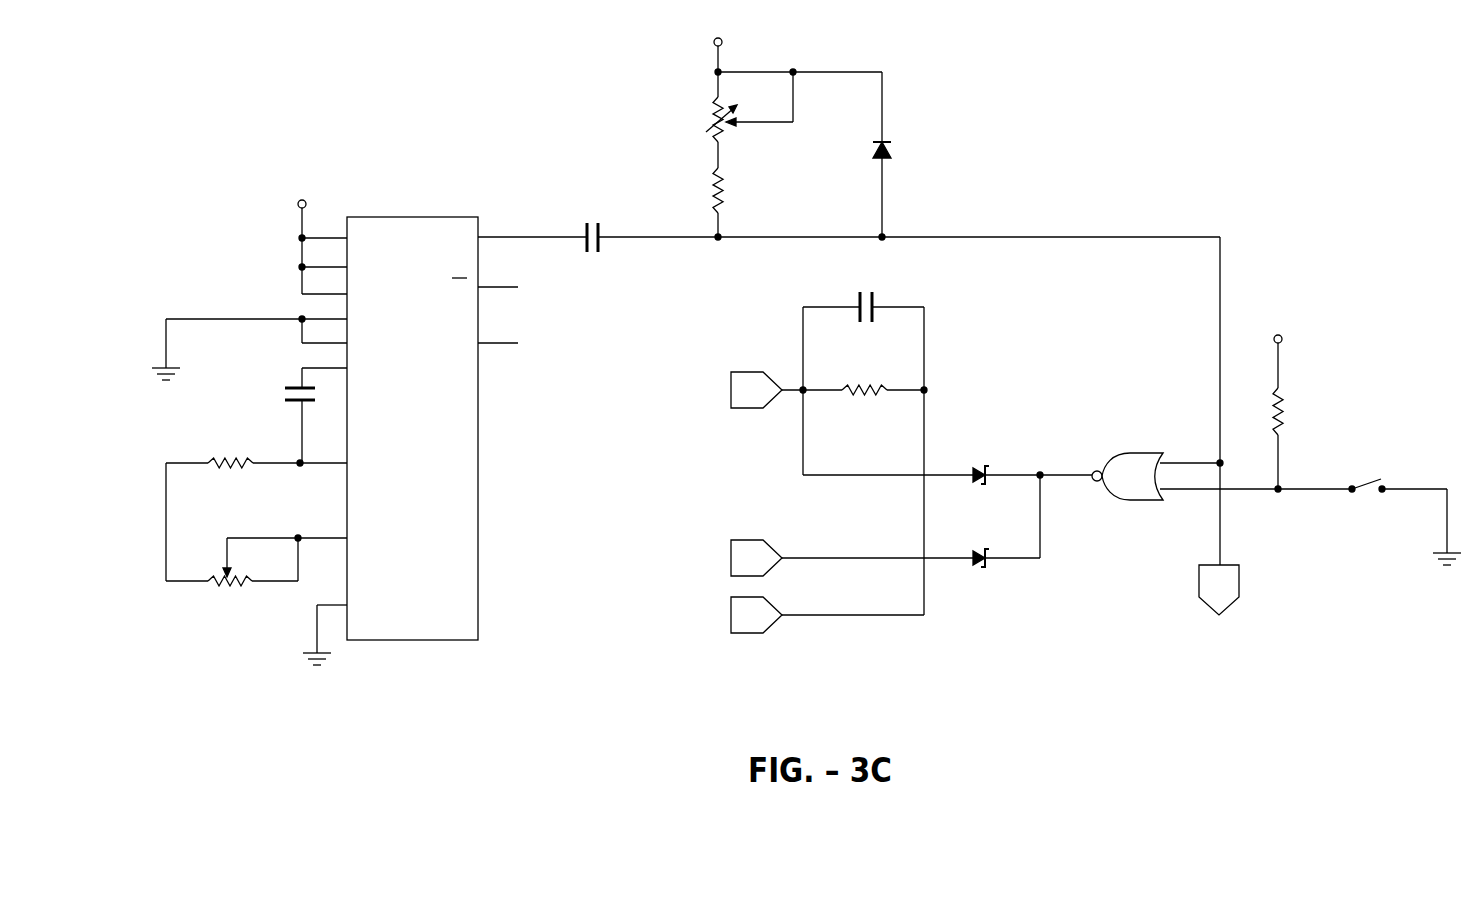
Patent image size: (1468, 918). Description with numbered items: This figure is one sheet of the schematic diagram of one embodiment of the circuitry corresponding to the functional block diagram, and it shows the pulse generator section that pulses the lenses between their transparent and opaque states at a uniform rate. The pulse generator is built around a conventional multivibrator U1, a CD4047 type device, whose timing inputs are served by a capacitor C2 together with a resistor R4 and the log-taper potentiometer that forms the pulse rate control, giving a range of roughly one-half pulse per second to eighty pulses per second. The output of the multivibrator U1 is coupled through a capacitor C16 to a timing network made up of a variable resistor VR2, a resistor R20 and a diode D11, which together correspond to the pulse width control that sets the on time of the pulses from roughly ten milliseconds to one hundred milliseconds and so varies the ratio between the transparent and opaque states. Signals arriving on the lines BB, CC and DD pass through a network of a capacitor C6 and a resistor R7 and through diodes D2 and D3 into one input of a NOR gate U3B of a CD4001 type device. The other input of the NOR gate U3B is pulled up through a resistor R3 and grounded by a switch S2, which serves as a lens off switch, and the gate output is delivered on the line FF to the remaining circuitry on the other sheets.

The CD4047BCM monostable/astable multivibrator U1 is at (369, 425).
The capacitor .5UF NPO C2 is at (271, 404).
The resistor 5.6K R4 is at (256, 466).
The capacitor 1UF C16 is at (897, 240).
The variable resistor 100K VR2 is at (767, 92).
The resistor 10K R20 is at (694, 204).
The diode DL4148 D11 is at (923, 156).
The capacitor 10PF C6 is at (863, 441).
The resistor 33K R7 is at (854, 415).
The signal BB input BB is at (756, 390).
The signal CC input CC is at (852, 558).
The signal DD input DD is at (827, 615).
The diode ZC5800E D2 is at (947, 475).
The diode ZC5800E D3 is at (991, 533).
The NOR gate CD4001BCM U3B is at (1210, 478).
The signal FF output FF is at (1219, 426).
The resistor 100K R3 is at (1298, 402).
The switch S2 is at (1398, 506).